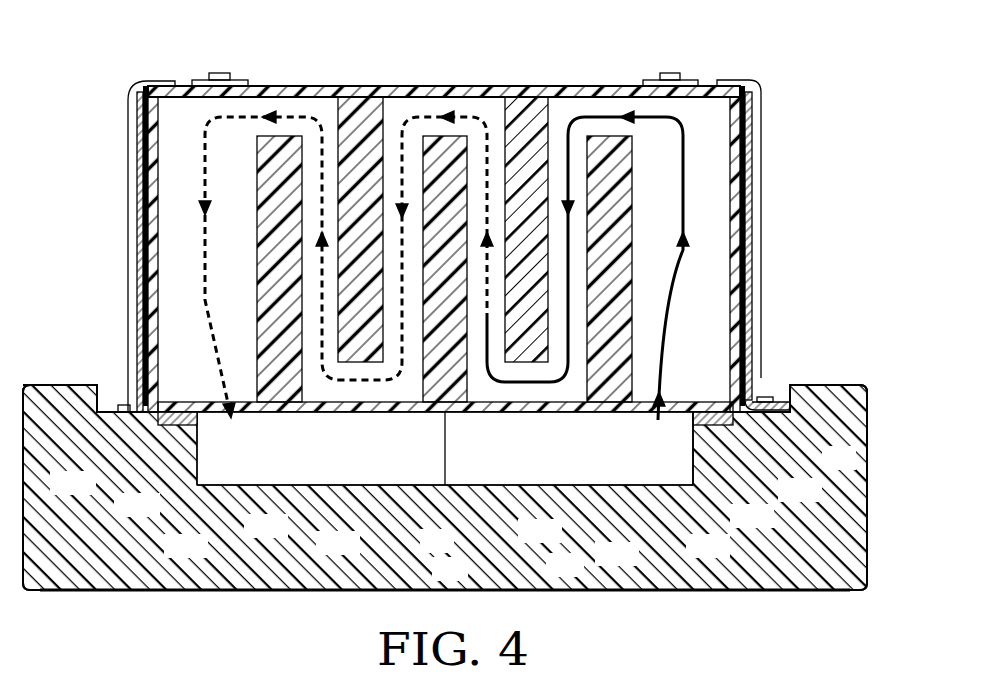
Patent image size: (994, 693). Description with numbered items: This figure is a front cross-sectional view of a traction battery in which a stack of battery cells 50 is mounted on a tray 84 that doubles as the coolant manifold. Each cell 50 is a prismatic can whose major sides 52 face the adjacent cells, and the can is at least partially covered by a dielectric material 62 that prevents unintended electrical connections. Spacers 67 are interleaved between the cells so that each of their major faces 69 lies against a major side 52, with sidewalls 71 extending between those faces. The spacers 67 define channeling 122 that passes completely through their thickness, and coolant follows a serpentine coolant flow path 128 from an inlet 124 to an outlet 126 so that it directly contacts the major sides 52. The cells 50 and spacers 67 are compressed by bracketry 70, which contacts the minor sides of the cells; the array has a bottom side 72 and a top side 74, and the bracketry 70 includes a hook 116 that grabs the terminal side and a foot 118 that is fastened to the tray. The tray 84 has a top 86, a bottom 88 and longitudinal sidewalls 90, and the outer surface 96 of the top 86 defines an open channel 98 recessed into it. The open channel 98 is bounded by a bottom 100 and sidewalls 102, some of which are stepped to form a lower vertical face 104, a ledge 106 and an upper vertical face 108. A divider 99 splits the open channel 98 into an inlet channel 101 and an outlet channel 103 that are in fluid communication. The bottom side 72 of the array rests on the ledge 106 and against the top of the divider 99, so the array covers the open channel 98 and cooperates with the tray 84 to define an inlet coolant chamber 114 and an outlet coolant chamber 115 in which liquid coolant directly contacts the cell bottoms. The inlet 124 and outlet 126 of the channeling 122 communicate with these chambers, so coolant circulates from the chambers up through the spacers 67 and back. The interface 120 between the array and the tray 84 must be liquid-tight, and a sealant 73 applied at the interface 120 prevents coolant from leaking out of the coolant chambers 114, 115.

The battery cell 50 is at (328, 85).
The major sides 52 is at (197, 254).
The dielectric material 62 is at (188, 282).
The spacers 67 is at (527, 97).
The major faces 69 is at (530, 140).
The bracketry 70 is at (127, 185).
The sidewalls 71 is at (735, 120).
The bottom side 72 is at (313, 408).
The sealant 73 is at (697, 427).
The top side 74 is at (273, 85).
The tray 84 is at (445, 487).
The top 86 is at (82, 385).
The bottom 88 is at (820, 590).
The longitudinal sidewalls 90 is at (867, 540).
The outer surface 96 is at (790, 397).
The open channel 98 is at (516, 500).
The divider 99 is at (458, 482).
The bottom 100 is at (600, 488).
The inlet channel 101 is at (670, 472).
The sidewalls 102 is at (198, 470).
The outlet channel 103 is at (380, 472).
The lower vertical face 104 is at (700, 476).
The ledge 106 is at (120, 412).
The upper vertical face 108 is at (800, 390).
The inlet coolant chamber 114 is at (636, 478).
The outlet coolant chamber 115 is at (323, 470).
The hook 116 is at (735, 80).
The foot 118 is at (768, 400).
The interface 120 is at (712, 388).
The channeling 122 is at (702, 207).
The inlet 124 is at (697, 458).
The outlet 126 is at (222, 437).
The coolant flow path 128 is at (602, 115).